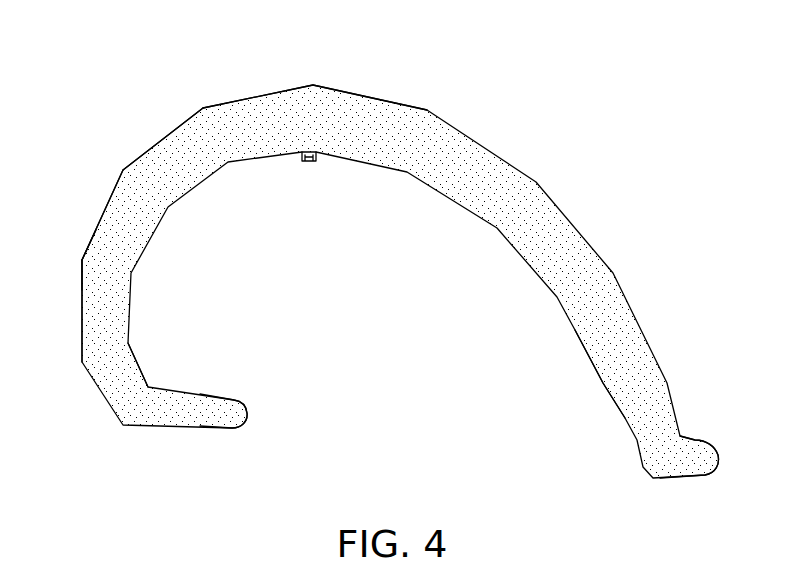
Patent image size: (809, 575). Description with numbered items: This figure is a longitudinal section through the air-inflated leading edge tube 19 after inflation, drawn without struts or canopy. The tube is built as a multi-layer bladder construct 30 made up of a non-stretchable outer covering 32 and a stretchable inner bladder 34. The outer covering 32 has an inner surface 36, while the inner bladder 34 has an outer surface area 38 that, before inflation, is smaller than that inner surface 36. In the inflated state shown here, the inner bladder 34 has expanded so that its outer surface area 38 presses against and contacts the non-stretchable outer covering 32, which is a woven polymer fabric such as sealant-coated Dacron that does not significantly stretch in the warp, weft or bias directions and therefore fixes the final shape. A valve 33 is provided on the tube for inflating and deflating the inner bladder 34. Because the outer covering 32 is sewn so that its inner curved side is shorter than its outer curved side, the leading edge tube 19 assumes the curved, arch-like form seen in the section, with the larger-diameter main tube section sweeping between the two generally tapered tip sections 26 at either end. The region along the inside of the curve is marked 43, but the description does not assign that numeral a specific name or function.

The leading edge tube 19 is at (291, 72).
The multi-layer bladder construct 30 is at (225, 97).
The non-stretchable outer covering 32 is at (133, 163).
The inner surface 36 is at (113, 185).
The inner bladder 34 is at (85, 252).
The outer surface area 38 is at (80, 268).
The valve 33 is at (300, 158).
The inner surface 43 is at (155, 374).
The tip sections 26 is at (247, 408).